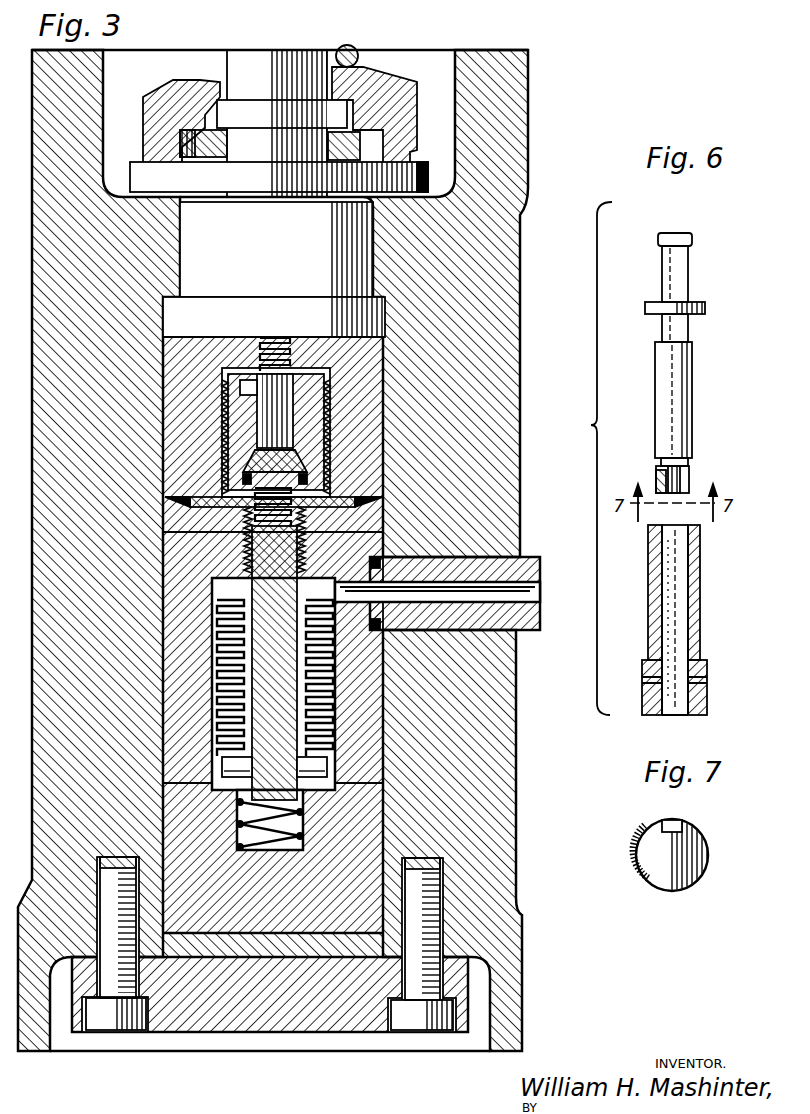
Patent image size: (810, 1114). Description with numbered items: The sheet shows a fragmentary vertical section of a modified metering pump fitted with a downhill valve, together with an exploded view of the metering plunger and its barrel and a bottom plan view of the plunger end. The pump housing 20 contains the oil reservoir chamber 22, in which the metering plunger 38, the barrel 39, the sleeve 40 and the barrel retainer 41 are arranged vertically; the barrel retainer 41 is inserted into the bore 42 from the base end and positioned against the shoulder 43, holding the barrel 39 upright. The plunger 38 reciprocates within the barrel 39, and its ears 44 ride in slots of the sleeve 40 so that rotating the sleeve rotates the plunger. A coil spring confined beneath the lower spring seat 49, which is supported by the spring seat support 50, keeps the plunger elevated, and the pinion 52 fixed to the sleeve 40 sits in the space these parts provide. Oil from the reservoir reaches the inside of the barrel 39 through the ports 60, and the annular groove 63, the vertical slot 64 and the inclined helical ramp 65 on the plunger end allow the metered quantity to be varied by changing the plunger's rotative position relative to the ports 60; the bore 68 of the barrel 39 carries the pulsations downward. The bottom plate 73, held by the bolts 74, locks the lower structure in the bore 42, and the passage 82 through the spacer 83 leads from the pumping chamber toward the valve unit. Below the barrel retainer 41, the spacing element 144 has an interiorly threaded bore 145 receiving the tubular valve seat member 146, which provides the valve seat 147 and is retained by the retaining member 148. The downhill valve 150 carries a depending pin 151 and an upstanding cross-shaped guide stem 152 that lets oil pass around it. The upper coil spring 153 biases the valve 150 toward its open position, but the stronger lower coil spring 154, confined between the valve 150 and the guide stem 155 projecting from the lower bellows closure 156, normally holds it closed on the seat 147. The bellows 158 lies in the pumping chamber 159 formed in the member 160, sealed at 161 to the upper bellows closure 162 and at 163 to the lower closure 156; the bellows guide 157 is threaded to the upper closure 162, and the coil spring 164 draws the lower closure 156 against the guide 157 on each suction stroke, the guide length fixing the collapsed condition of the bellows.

In FIG. 3, the pump housing 20 is at (545, 72).
In FIG. 3, the oil reservoir chamber 22 is at (107, 93).
In FIG. 6, the metering plunger 38 is at (680, 380).
In FIG. 7, the metering plunger 38 is at (710, 868).
In FIG. 6, the barrel 39 is at (702, 590).
In FIG. 3, the sleeve 40 is at (268, 58).
In FIG. 3, the barrel retainer 41 is at (200, 238).
In FIG. 3, the bore 42 is at (175, 738).
In FIG. 3, the shoulder 43 is at (378, 293).
In FIG. 6, the ears 44 is at (700, 306).
In FIG. 3, the lower spring seat 49 is at (350, 108).
In FIG. 3, the spring seat support 50 is at (430, 178).
In FIG. 3, the pinion 52 is at (362, 118).
In FIG. 6, the ports 60 is at (710, 678).
In FIG. 6, the annular groove 63 is at (688, 462).
In FIG. 6, the vertical slot 64 is at (690, 478).
In FIG. 7, the vertical slot 64 is at (680, 822).
In FIG. 6, the inclined helical ramp 65 is at (660, 480).
In FIG. 7, the inclined helical ramp 65 is at (640, 838).
In FIG. 6, the bore of the barrel 68 is at (672, 698).
In FIG. 3, the bottom plate 73 is at (272, 1033).
In FIG. 3, the bolts 74 is at (392, 1033).
In FIG. 3, the passage 82 is at (455, 560).
In FIG. 3, the spacer 83 is at (458, 618).
In FIG. 3, the spacing element 144 is at (383, 372).
In FIG. 3, the interiorly threaded bore 145 is at (335, 420).
In FIG. 3, the tubular valve seat member 146 is at (240, 395).
In FIG. 3, the valve seat 147 is at (226, 446).
In FIG. 3, the retaining member 148 is at (225, 418).
In FIG. 3, the downhill valve 150 is at (330, 452).
In FIG. 3, the depending pin 151 is at (240, 476).
In FIG. 3, the upstanding guide stem 152 is at (262, 365).
In FIG. 3, the upper coil spring 153 is at (270, 345).
In FIG. 3, the lower coil spring 154 is at (240, 505).
In FIG. 3, the guide stem 155 is at (230, 548).
In FIG. 3, the lower bellows closure 156 is at (222, 768).
In FIG. 3, the bellows guide 157 is at (332, 628).
In FIG. 3, the bellows 158 is at (325, 648).
In FIG. 3, the pumping chamber 159 is at (338, 670).
In FIG. 3, the member 160 is at (175, 680).
In FIG. 3, the seal 161 is at (380, 536).
In FIG. 3, the upper bellows closure 162 is at (340, 497).
In FIG. 3, the seal 163 is at (340, 772).
In FIG. 3, the coil spring 164 is at (300, 825).